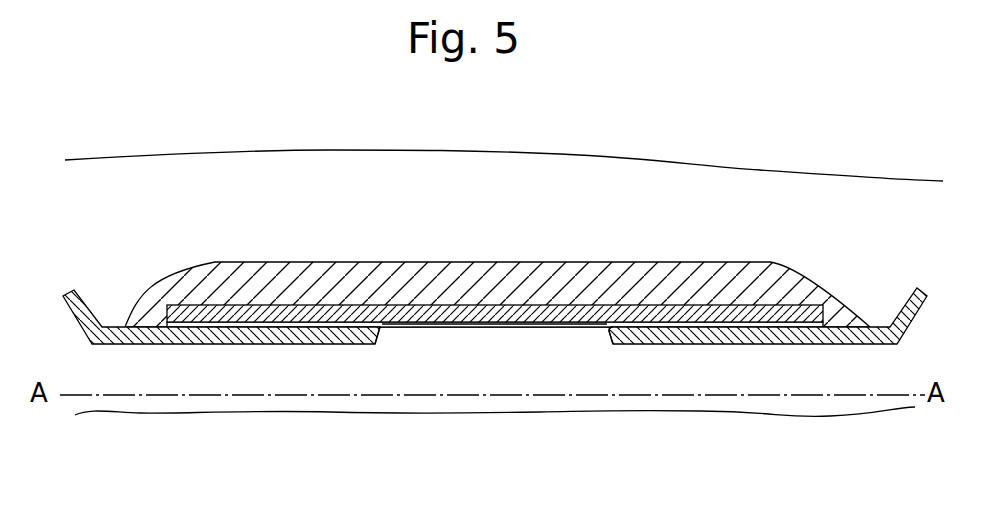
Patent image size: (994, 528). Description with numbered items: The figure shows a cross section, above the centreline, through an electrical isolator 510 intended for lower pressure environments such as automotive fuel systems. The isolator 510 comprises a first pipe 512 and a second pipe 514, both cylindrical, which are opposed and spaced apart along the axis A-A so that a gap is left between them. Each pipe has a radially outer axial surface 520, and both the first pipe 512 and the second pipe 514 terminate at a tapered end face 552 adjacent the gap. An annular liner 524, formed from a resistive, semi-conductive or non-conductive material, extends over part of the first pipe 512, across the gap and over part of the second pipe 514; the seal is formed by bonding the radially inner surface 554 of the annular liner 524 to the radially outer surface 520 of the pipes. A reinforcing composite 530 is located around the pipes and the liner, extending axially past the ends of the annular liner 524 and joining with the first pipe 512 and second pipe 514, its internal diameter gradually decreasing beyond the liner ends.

The electrical isolator 510 is at (458, 198).
The first pipe 512 is at (193, 340).
The second pipe 514 is at (805, 340).
The radially outer axial surface 520 is at (722, 322).
The annular liner 524 is at (548, 324).
The reinforcing composite 530 is at (598, 290).
The tapered end face 552 is at (377, 340).
The radially inner surface 554 is at (350, 325).